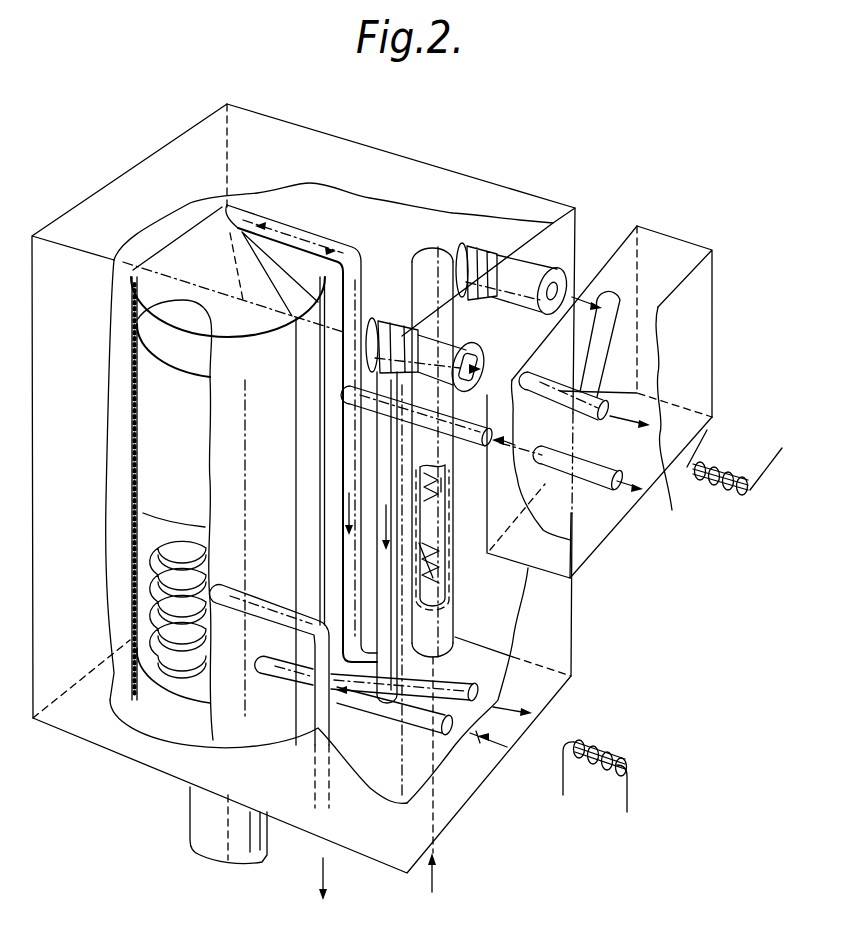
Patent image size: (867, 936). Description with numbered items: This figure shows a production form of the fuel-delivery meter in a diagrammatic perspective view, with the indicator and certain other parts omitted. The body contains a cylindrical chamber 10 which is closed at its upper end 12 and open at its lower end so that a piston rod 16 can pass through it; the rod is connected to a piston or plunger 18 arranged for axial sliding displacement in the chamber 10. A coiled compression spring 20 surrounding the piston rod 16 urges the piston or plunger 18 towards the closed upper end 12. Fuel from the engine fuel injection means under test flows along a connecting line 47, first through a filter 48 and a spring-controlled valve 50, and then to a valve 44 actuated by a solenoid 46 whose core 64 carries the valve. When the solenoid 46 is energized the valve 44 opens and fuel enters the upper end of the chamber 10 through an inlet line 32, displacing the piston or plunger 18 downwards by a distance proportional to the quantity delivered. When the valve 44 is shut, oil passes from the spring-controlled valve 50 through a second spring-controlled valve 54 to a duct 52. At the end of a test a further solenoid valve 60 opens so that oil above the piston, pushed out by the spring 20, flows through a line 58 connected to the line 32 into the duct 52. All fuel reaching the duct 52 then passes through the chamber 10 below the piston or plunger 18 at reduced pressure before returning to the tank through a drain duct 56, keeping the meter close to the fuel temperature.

The cylindrical chamber 10 is at (125, 407).
The closed upper end 12 is at (173, 237).
The piston rod 16 is at (170, 550).
The piston or plunger 18 is at (143, 470).
The coiled compression spring 20 is at (160, 613).
The inlet line 32 is at (341, 247).
The solenoid valve 44 is at (650, 414).
The solenoid 46 is at (726, 467).
The connecting line 47 is at (431, 808).
The filter 48 is at (437, 590).
The spring-controlled valve 50 is at (483, 243).
The duct 52 is at (370, 702).
The second spring-controlled valve 54 is at (460, 344).
The drain duct 56 is at (317, 740).
The line 58 is at (341, 545).
The solenoid valve 60 is at (561, 714).
The solenoid core 64 is at (734, 482).